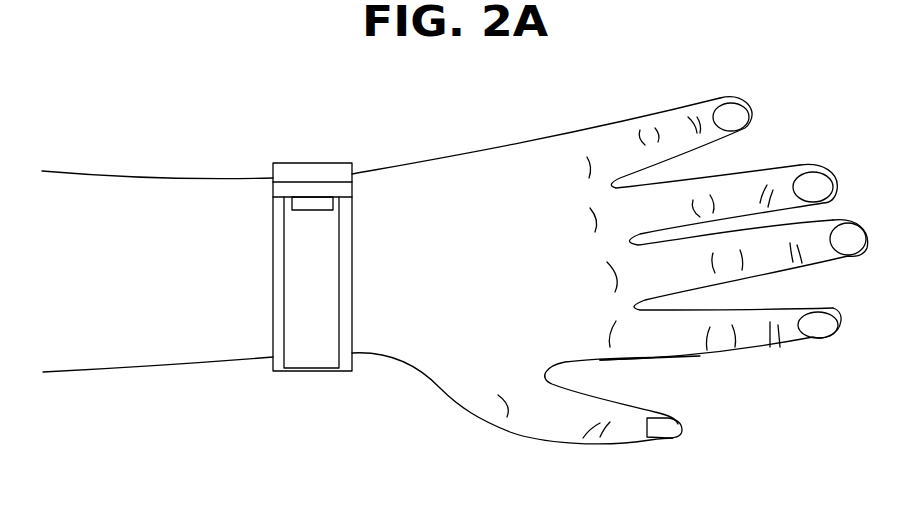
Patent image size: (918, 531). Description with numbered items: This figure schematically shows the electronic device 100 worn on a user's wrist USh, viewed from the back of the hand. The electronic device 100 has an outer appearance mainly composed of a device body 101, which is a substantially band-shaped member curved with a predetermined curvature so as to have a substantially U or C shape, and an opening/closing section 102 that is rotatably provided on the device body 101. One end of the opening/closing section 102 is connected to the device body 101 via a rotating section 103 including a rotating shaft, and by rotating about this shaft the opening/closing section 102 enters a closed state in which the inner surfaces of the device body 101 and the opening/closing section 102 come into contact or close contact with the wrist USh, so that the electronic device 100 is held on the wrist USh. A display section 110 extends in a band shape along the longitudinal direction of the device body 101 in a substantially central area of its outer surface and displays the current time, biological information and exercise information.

The electronic device 100 is at (316, 225).
The device body 101 is at (273, 250).
The opening/closing section 102 is at (327, 162).
The rotating section 103 is at (352, 187).
The display section 110 is at (322, 305).
The wrist USh is at (193, 343).